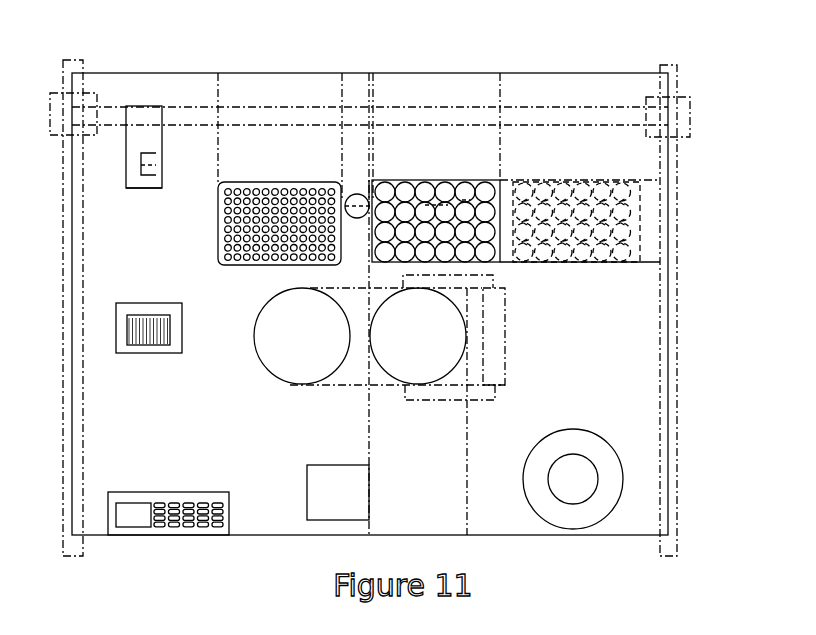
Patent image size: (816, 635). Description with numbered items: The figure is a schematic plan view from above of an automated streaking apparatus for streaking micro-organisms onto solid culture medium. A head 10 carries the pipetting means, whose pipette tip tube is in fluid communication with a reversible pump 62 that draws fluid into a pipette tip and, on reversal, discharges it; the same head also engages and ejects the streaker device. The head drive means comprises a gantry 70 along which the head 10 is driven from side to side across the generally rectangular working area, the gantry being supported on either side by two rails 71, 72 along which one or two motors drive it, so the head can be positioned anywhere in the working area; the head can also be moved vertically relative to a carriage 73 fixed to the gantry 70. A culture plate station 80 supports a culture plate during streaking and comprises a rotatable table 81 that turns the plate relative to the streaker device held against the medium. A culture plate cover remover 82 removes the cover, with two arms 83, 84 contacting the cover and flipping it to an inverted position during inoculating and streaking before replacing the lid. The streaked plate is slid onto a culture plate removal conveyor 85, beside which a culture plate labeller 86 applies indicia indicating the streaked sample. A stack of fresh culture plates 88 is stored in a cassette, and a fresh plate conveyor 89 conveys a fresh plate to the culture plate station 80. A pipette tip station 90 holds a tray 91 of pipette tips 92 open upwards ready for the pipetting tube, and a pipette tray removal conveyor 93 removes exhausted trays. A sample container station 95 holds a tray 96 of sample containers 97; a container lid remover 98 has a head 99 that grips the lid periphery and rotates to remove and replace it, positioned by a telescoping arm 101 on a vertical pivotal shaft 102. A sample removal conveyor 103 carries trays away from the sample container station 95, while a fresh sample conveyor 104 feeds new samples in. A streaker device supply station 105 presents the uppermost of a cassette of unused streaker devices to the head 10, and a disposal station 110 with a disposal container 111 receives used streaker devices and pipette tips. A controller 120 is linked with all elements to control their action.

The head 10 is at (137, 188).
The reversible pump 62 is at (145, 165).
The gantry 70 is at (191, 88).
The rail 71 is at (68, 285).
The rail 72 is at (660, 305).
The carriage 73 is at (135, 106).
The culture plate station 80 is at (467, 323).
The rotatable table 81 is at (409, 335).
The culture plate cover remover 82 is at (517, 352).
The arm 83 is at (500, 280).
The arm 84 is at (477, 393).
The culture plate removal conveyor 85 is at (410, 477).
The culture plate labeller 86 is at (327, 494).
The fresh culture plate 88 is at (287, 339).
The fresh plate conveyor 89 is at (352, 314).
The pipette tip station 90 is at (216, 262).
The tray 91 is at (235, 263).
The pipette tip 92 is at (228, 220).
The pipette tray removal conveyor 93 is at (256, 161).
The sample container station 95 is at (509, 178).
The tray 96 is at (420, 180).
The sample container 97 is at (462, 188).
The container lid remover 98 is at (369, 194).
The head 99 is at (480, 190).
The telescoping arm 101 is at (433, 193).
The vertical pivotal shaft 102 is at (350, 194).
The sample removal conveyor 103 is at (424, 102).
The fresh sample conveyor 104 is at (647, 203).
The streaker device supply station 105 is at (153, 365).
The disposal station 110 is at (623, 481).
The disposal container 111 is at (575, 478).
The controller 120 is at (150, 527).